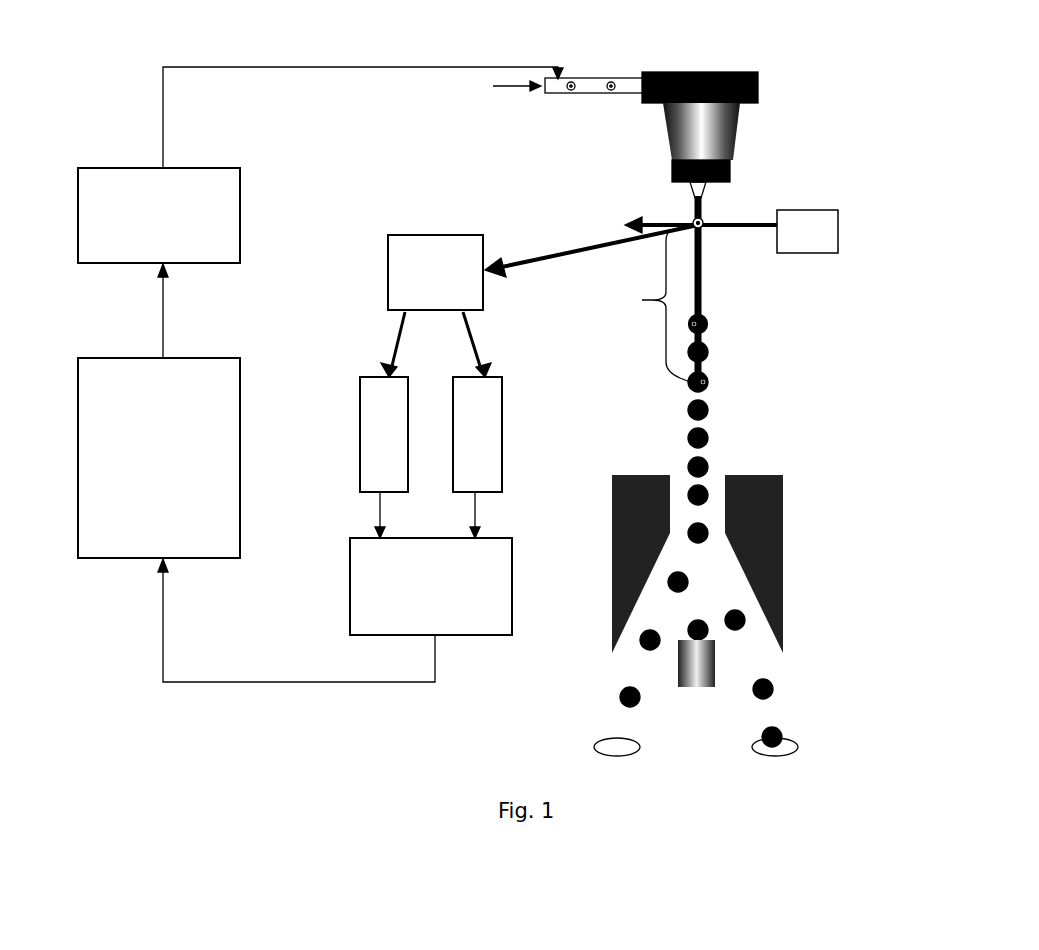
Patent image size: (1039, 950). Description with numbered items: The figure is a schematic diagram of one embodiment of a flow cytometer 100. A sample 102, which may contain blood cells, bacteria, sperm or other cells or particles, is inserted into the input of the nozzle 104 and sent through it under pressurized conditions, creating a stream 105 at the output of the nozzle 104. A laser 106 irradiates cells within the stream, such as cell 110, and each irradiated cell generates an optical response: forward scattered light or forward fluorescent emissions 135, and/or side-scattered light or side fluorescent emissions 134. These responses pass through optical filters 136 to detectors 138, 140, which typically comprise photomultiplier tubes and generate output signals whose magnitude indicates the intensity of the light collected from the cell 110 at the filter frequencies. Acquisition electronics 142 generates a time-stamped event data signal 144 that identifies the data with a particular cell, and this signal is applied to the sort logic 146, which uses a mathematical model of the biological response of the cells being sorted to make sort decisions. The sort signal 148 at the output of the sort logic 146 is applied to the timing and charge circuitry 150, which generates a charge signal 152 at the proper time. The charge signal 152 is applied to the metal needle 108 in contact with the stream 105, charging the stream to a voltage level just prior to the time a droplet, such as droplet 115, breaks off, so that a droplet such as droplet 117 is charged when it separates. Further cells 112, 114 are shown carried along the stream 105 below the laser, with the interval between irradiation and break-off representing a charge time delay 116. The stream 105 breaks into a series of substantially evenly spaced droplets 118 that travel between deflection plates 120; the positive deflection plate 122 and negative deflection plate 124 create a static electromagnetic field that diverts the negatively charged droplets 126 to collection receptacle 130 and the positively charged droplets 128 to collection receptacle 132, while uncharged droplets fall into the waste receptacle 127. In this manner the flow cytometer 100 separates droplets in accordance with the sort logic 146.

The flow cytometer 100 is at (534, 408).
The sample 102 is at (488, 92).
The nozzle 104 is at (733, 146).
The stream 105 is at (712, 273).
The laser 106 is at (848, 233).
The metal needle 108 is at (607, 72).
The cell 110 is at (703, 220).
The cell 112 is at (710, 324).
The cell 114 is at (710, 382).
The droplet 115 is at (701, 410).
The charge time delay 116 is at (615, 307).
The droplet 117 is at (712, 410).
The droplets 118 is at (718, 448).
The deflection plates 120 is at (741, 570).
The positive deflection plate 122 is at (790, 598).
The negative deflection plate 124 is at (602, 598).
The negatively charged droplets 126 is at (780, 688).
The waste receptacle 127 is at (698, 692).
The positively charged droplets 128 is at (616, 695).
The collection receptacle 130 is at (804, 746).
The collection receptacle 132 is at (588, 745).
The side-scattered light or side fluorescent emissions 134 is at (597, 240).
The forward scattered light or forward fluorescent emissions 135 is at (663, 218).
The optical filters 136 is at (383, 270).
The detector 138 is at (357, 390).
The detector 140 is at (505, 390).
The acquisition electronics 142 is at (347, 593).
The event data signal 144 is at (305, 692).
The sort logic 146 is at (243, 458).
The sort signal 148 is at (170, 308).
The timing and charge circuitry 150 is at (242, 213).
The charge signal 152 is at (345, 63).